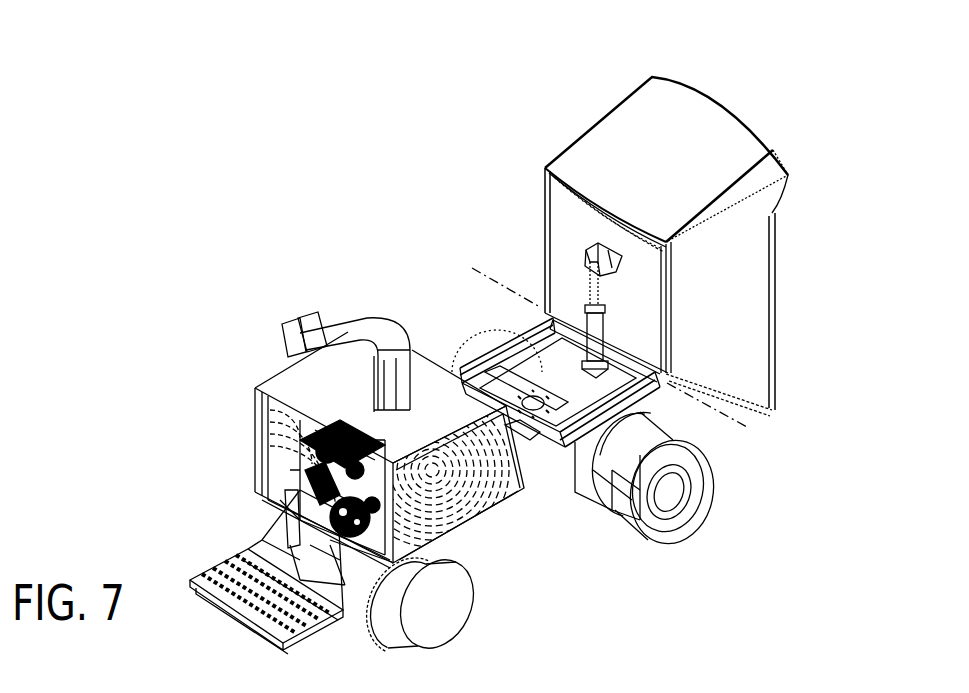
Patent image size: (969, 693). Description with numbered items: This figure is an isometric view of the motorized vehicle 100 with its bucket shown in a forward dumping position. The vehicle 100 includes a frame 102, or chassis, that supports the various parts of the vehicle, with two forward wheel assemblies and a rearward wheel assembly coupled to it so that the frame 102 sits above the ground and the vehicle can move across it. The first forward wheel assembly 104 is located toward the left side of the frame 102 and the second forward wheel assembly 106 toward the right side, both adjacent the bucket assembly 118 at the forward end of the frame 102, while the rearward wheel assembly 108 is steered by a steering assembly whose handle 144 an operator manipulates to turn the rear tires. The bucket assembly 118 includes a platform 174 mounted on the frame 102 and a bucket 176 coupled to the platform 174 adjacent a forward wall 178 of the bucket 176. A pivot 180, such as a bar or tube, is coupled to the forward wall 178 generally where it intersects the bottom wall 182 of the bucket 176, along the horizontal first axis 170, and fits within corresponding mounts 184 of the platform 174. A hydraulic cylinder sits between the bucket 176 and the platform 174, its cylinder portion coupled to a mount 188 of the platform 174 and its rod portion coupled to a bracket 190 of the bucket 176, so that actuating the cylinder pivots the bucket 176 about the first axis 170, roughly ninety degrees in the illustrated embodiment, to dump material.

The vehicle 100 is at (185, 182).
The frame 102 is at (468, 533).
The first forward wheel assembly 104 is at (436, 335).
The second forward wheel assembly 106 is at (712, 524).
The rearward wheel assembly 108 is at (240, 520).
The bucket assembly 118 is at (810, 364).
The handle 144 is at (277, 340).
The first axis 170 is at (478, 268).
The platform 174 is at (522, 435).
The bucket 176 is at (692, 84).
The forward wall 178 is at (598, 345).
The pivot 180 is at (547, 333).
The bottom wall 182 is at (557, 193).
The mounts 184 is at (553, 323).
The mount 188 is at (597, 370).
The bracket 190 is at (612, 258).